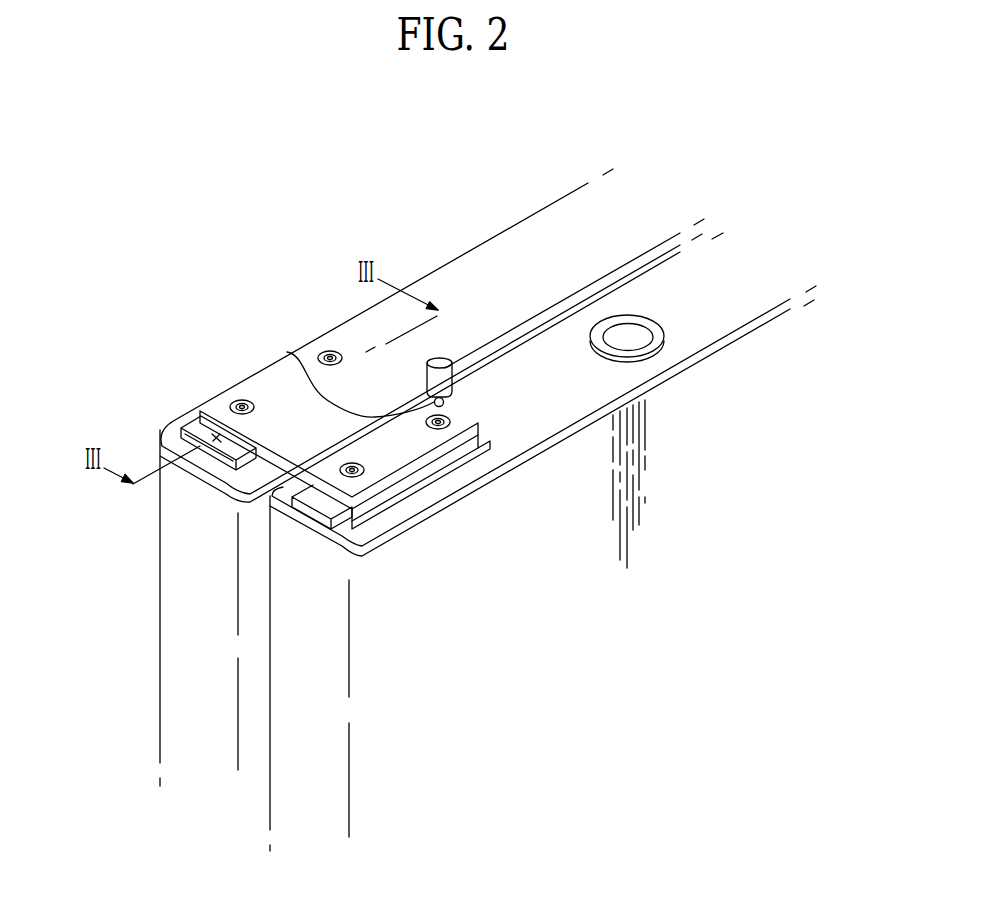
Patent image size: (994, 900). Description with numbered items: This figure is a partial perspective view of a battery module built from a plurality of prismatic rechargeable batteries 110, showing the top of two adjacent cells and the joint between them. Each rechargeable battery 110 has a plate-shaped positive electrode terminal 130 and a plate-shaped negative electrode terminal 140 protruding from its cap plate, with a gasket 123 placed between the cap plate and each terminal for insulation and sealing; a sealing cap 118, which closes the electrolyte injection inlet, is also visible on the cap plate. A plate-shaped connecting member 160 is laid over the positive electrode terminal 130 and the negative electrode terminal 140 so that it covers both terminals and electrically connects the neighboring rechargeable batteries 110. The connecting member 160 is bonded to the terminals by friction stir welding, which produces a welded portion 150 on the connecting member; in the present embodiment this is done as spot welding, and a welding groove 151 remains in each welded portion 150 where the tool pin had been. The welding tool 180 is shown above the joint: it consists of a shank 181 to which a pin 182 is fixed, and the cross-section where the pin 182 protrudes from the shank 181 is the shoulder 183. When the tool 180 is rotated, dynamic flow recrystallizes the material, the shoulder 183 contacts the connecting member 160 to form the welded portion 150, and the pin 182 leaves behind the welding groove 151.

The rechargeable battery 110 is at (258, 671).
The sealing cap 118 is at (664, 341).
The gasket 123 is at (446, 471).
The positive electrode terminal 130 is at (375, 498).
The negative electrode terminal 140 is at (188, 427).
The welded portion 150 is at (322, 340).
The welding groove 151 is at (329, 351).
The connecting member 160 is at (351, 330).
The tool 180 is at (603, 407).
The shank 181 is at (449, 360).
The pin 182 is at (459, 395).
The shoulder 183 is at (287, 352).